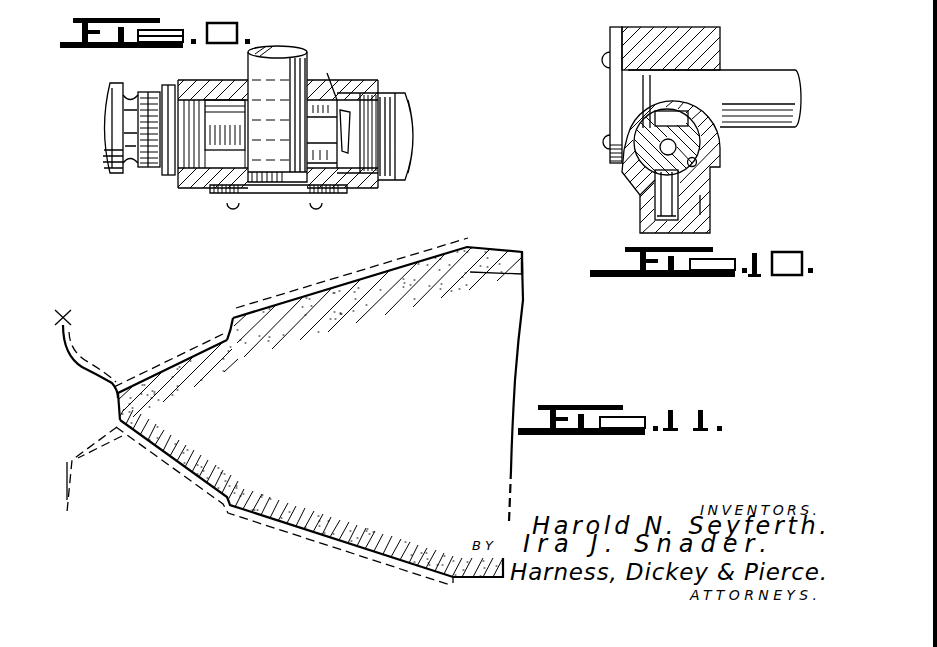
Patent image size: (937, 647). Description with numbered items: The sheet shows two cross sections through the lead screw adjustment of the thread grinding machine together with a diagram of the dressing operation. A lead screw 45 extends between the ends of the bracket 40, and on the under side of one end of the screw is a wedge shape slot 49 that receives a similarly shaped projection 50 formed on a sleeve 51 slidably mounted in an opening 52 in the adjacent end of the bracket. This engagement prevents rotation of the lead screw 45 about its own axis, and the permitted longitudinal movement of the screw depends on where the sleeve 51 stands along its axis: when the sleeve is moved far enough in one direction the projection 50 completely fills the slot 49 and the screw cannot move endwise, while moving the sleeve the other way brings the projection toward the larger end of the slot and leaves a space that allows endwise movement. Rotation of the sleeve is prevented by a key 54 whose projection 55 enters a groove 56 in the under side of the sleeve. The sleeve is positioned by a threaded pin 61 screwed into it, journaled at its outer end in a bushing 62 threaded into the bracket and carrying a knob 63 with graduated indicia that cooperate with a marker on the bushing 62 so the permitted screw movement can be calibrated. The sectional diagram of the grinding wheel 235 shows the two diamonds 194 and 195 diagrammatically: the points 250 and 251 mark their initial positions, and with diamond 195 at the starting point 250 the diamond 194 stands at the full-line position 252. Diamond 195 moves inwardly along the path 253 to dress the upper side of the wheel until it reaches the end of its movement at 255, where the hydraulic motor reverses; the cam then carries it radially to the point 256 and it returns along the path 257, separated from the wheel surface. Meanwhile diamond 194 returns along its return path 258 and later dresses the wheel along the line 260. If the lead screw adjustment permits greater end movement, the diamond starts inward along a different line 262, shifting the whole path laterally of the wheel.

In FIG. 9, the bracket 40 is at (348, 81).
In FIG. 10, the bracket 40 is at (719, 192).
In FIG. 9, the lead screw 45 is at (293, 58).
In FIG. 10, the lead screw 45 is at (725, 73).
In FIG. 9, the wedge shape slot 49 is at (328, 74).
In FIG. 10, the wedge shape slot 49 is at (714, 130).
In FIG. 9, the projection 50 is at (343, 128).
In FIG. 10, the projection 50 is at (660, 113).
In FIG. 10, the sleeve 51 is at (701, 148).
In FIG. 10, the opening 52 is at (697, 164).
In FIG. 10, the key 54 is at (662, 207).
In FIG. 10, the projection 55 is at (648, 176).
In FIG. 10, the groove 56 is at (700, 205).
In FIG. 9, the threaded pin 61 is at (185, 187).
In FIG. 9, the bushing 62 is at (160, 170).
In FIG. 9, the knob 63 is at (110, 176).
In FIG. 11, the diamond 194 is at (70, 320).
In FIG. 11, the diamond 195 is at (476, 224).
In FIG. 11, the grinding wheel 235 is at (516, 328).
In FIG. 11, the starting point 250 is at (63, 505).
In FIG. 11, the initial position 251 is at (63, 317).
In FIG. 11, the position of diamond 252 is at (448, 585).
In FIG. 11, the path 253 is at (177, 371).
In FIG. 11, the end of movement 255 is at (487, 246).
In FIG. 11, the point 256 is at (472, 266).
In FIG. 11, the path 257 is at (372, 275).
In FIG. 11, the return path 258 is at (322, 537).
In FIG. 11, the path of movement 260 is at (96, 361).
In FIG. 11, the line 262 is at (79, 470).